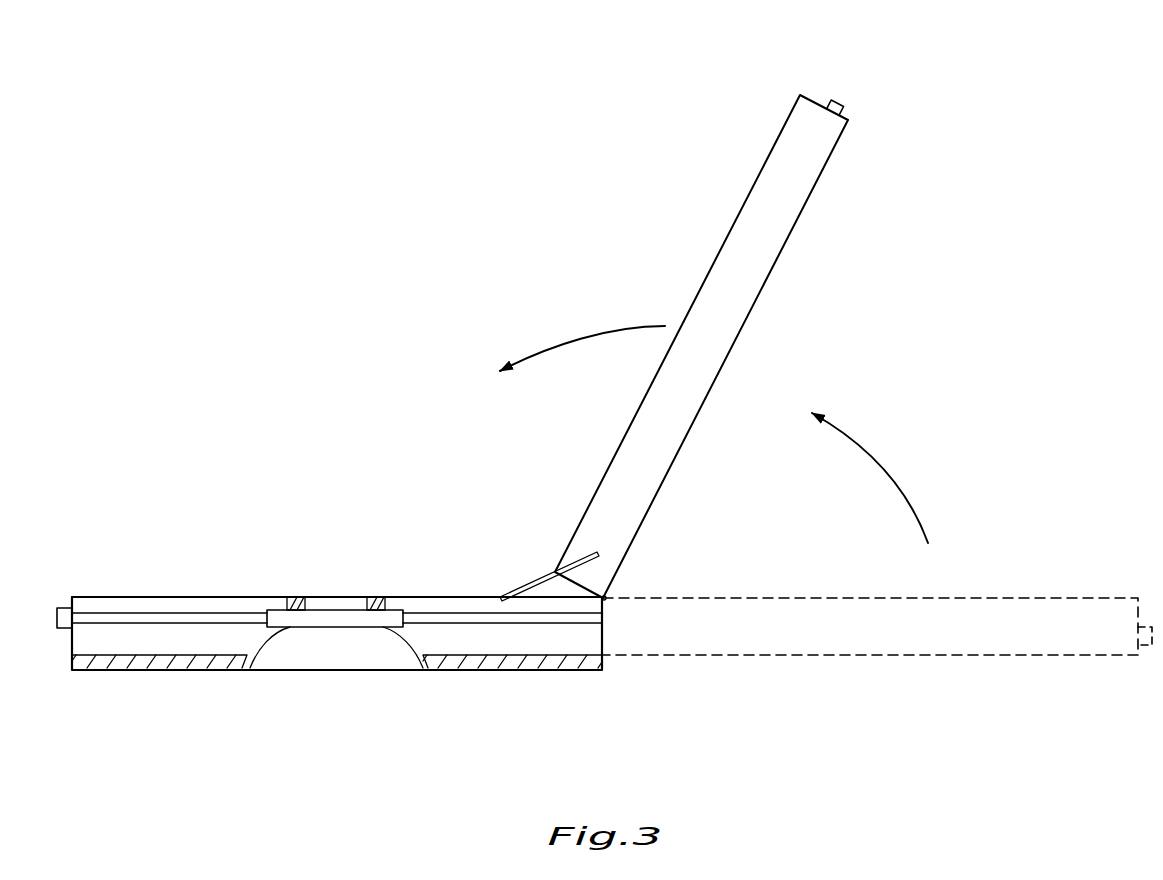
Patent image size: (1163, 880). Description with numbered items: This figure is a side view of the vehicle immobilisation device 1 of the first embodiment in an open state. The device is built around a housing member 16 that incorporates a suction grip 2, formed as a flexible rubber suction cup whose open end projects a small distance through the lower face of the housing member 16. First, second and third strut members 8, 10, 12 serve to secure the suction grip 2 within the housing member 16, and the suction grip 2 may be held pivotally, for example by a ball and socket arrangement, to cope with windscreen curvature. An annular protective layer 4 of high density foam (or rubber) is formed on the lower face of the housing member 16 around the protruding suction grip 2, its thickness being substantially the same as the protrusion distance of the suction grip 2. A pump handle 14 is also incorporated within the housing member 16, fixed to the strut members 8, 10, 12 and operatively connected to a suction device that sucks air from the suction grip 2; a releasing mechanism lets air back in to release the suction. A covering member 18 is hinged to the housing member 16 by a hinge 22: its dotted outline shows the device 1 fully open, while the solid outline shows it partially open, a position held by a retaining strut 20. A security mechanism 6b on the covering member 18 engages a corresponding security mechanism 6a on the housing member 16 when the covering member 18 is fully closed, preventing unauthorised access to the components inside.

The vehicle immobilisation device 1 is at (377, 271).
The suction grip 2 is at (311, 642).
The annular protective layer 4 is at (162, 666).
The security mechanism 6a is at (62, 607).
The security mechanism 6b is at (838, 100).
The first strut member 8 is at (226, 612).
The second strut member 10 is at (372, 607).
The third strut member 12 is at (292, 600).
The pump handle 14 is at (325, 607).
The housing member 16 is at (147, 600).
The covering member 18 is at (730, 228).
The retaining strut 20 is at (530, 580).
The hinge 22 is at (607, 597).